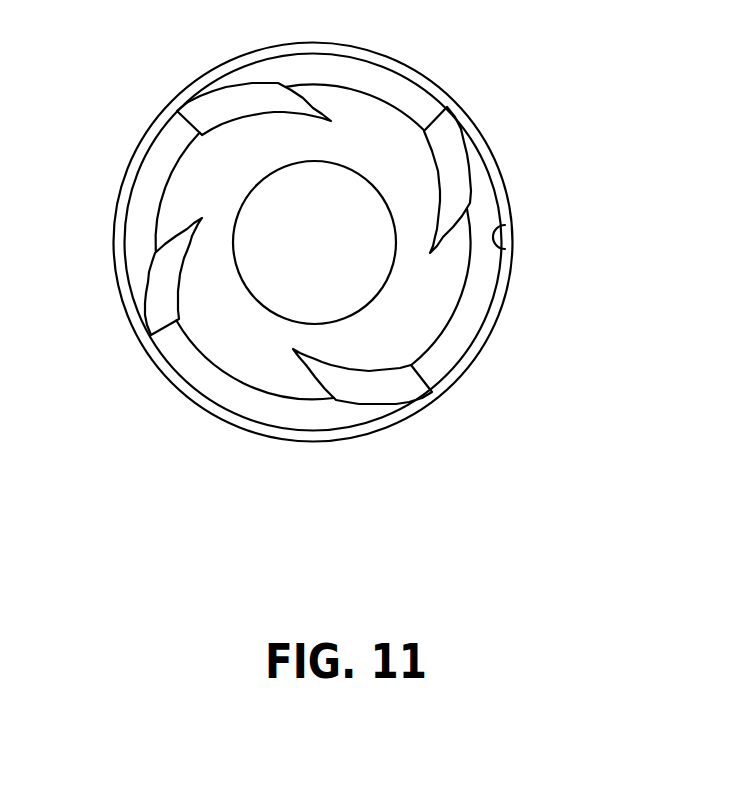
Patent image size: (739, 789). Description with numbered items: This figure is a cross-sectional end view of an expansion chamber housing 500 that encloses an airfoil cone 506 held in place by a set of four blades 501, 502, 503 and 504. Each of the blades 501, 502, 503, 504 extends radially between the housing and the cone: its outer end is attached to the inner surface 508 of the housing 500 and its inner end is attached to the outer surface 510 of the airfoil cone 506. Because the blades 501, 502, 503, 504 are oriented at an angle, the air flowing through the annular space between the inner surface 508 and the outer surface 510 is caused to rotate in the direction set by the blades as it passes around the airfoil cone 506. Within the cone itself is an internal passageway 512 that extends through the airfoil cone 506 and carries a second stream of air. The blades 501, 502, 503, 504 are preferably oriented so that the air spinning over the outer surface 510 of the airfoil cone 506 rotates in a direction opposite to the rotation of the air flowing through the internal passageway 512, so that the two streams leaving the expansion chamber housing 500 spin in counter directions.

The expansion chamber housing 500 is at (505, 189).
The blade 501 is at (247, 97).
The blade 502 is at (458, 150).
The blade 503 is at (383, 390).
The blade 504 is at (157, 295).
The airfoil cone 506 is at (376, 120).
The inner surface 508 is at (503, 225).
The outer surface 510 is at (200, 177).
The internal passageway 512 is at (375, 273).